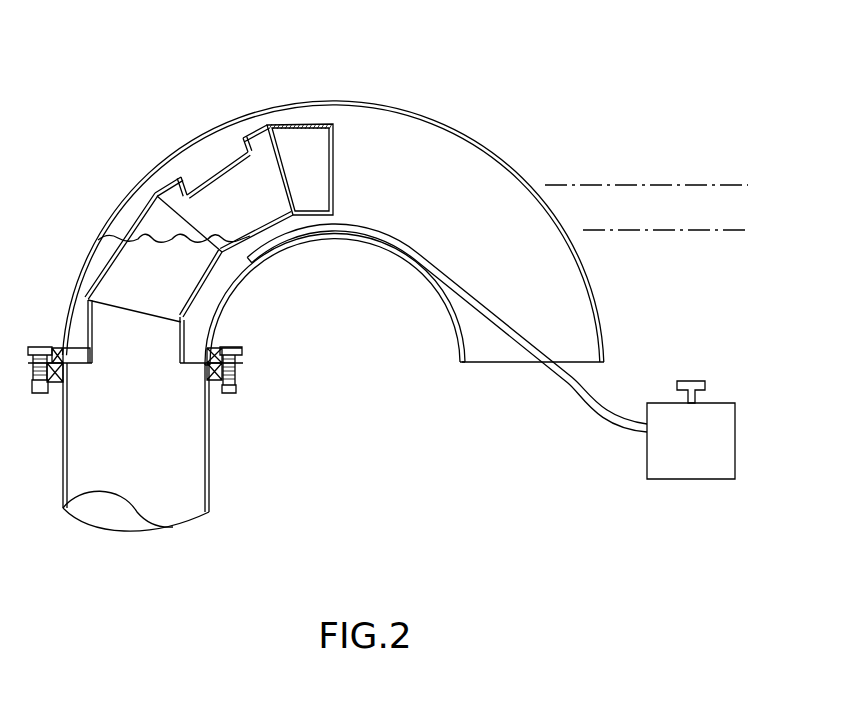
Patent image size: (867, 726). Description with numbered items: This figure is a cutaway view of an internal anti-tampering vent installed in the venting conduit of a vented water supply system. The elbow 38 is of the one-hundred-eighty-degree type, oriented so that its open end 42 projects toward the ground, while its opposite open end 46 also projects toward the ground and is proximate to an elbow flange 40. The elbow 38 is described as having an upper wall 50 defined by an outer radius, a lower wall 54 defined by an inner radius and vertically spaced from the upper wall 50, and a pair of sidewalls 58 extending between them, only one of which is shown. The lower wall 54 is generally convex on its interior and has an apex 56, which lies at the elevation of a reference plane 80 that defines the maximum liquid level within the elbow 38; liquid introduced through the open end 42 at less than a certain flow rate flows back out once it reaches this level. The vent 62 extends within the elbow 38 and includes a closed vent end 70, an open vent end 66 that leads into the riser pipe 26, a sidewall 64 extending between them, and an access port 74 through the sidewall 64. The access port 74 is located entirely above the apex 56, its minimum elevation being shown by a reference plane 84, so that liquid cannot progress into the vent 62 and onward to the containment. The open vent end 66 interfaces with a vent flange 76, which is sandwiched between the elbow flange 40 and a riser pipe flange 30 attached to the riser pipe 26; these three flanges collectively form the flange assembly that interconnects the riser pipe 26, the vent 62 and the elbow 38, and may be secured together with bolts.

The riser pipe 26 is at (210, 500).
The riser pipe flange 30 is at (226, 393).
The elbow 38 is at (400, 100).
The elbow flange 40 is at (220, 346).
The open end 42 is at (483, 364).
The opposite open end 46 is at (68, 358).
The upper wall 50 is at (275, 101).
The lower wall 54 is at (433, 284).
The apex 56 is at (327, 242).
The sidewall 58 is at (462, 215).
The vent 62 is at (318, 124).
The sidewall 64 is at (152, 210).
The open vent end 66 is at (135, 365).
The closed vent end 70 is at (334, 170).
The access port 74 is at (200, 162).
The vent flange 76 is at (80, 393).
The reference plane 80 is at (705, 231).
The reference plane 84 is at (675, 185).